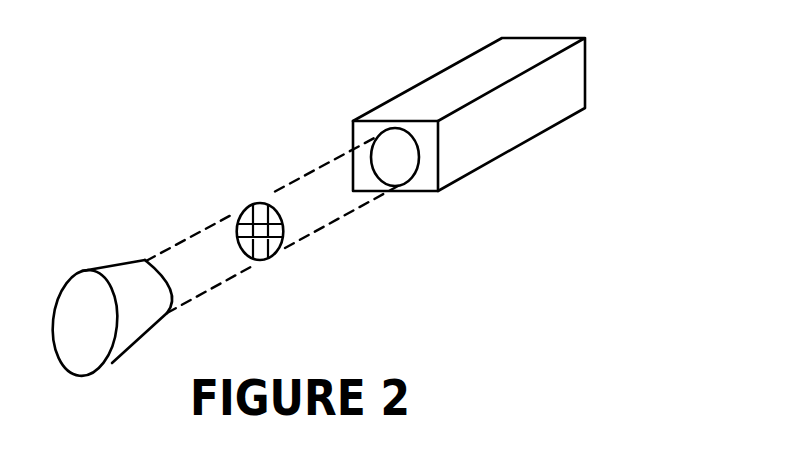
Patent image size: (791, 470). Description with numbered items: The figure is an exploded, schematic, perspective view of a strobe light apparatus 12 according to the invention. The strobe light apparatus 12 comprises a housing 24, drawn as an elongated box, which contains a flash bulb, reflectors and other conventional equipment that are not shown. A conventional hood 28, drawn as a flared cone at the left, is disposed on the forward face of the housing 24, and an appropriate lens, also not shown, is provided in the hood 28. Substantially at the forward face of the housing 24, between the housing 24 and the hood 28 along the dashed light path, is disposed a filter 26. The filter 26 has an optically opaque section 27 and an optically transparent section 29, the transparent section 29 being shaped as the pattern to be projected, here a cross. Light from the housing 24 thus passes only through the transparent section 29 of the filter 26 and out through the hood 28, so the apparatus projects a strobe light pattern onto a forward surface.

The strobe light apparatus 12 is at (450, 242).
The housing 24 is at (432, 77).
The filter 26 is at (268, 234).
The optically opaque section 27 is at (278, 253).
The hood 28 is at (110, 268).
The optically transparent section 29 is at (258, 260).